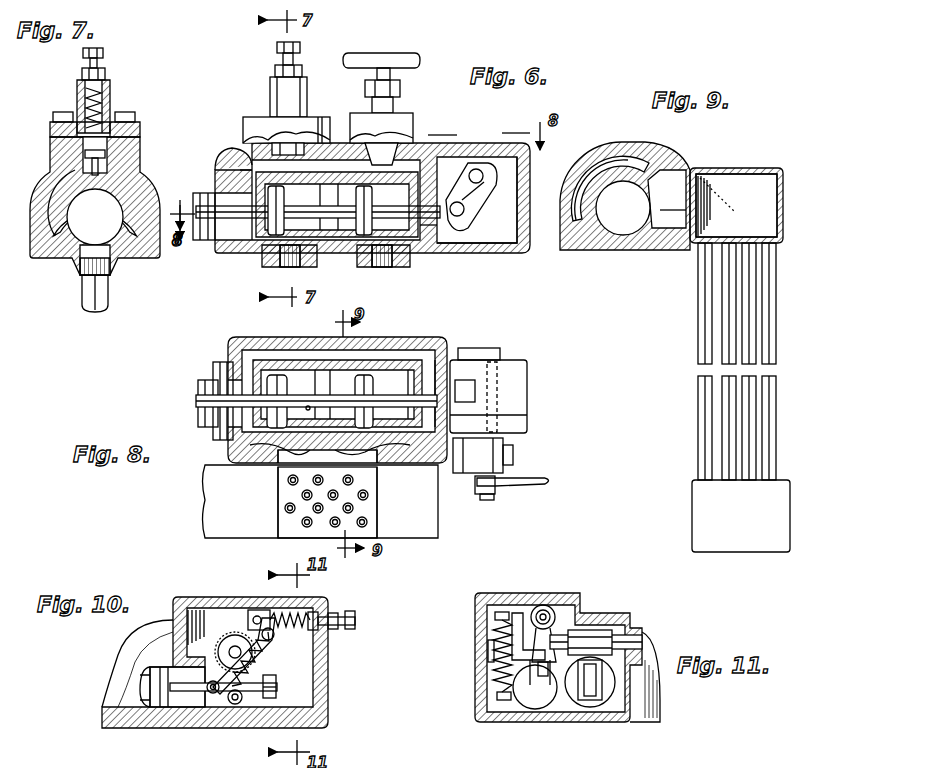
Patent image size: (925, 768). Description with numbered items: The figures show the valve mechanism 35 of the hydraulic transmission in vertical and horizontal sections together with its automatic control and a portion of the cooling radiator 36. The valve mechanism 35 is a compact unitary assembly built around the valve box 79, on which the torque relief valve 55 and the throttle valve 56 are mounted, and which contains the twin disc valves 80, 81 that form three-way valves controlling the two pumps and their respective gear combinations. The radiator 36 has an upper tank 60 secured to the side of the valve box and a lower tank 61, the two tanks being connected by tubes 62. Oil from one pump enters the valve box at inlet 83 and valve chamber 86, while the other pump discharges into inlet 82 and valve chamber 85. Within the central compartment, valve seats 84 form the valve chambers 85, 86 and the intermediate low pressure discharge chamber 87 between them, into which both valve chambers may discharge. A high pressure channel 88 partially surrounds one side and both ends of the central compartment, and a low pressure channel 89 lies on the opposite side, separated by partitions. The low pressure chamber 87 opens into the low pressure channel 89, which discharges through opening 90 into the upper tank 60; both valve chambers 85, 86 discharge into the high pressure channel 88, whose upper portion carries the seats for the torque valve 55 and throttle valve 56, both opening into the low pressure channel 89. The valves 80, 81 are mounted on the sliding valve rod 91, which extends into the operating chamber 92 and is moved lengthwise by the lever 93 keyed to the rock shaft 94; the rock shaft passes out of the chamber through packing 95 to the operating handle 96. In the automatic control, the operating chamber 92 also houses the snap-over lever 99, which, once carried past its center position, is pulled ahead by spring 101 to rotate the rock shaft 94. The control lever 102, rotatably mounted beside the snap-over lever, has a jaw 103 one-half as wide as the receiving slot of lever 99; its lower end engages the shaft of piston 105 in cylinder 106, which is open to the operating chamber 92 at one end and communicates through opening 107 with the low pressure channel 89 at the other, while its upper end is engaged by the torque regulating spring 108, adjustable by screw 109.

In FIG. 6, the valve mechanism 35 is at (420, 143).
In FIG. 9, the radiator 36 is at (752, 172).
In FIG. 8, the radiator 36 is at (215, 512).
In FIG. 7, the torque relief valve 55 is at (105, 95).
In FIG. 6, the torque relief valve 55 is at (270, 85).
In FIG. 6, the throttle valve 56 is at (400, 88).
In FIG. 9, the upper tank 60 is at (736, 205).
In FIG. 9, the lower tank 61 is at (706, 516).
In FIG. 9, the tubes 62 is at (700, 380).
In FIG. 6, the valve box 79 is at (342, 143).
In FIG. 8, the valve 80 is at (290, 365).
In FIG. 8, the valve 81 is at (370, 372).
In FIG. 6, the inlet 82 is at (283, 268).
In FIG. 6, the inlet 83 is at (388, 268).
In FIG. 8, the valve seats 84 is at (316, 428).
In FIG. 11, the valve seats 84 is at (600, 706).
In FIG. 7, the valve chamber 85 is at (112, 238).
In FIG. 6, the valve chamber 85 is at (262, 242).
In FIG. 8, the valve chamber 85 is at (297, 372).
In FIG. 8, the valve chamber 86 is at (400, 370).
In FIG. 6, the low pressure discharge chamber 87 is at (345, 242).
In FIG. 9, the low pressure discharge chamber 87 is at (625, 236).
In FIG. 8, the low pressure discharge chamber 87 is at (320, 475).
In FIG. 7, the high pressure channel 88 is at (55, 235).
In FIG. 6, the high pressure channel 88 is at (243, 163).
In FIG. 9, the high pressure channel 88 is at (612, 160).
In FIG. 8, the high pressure channel 88 is at (430, 355).
In FIG. 7, the low pressure channel 89 is at (125, 162).
In FIG. 9, the low pressure channel 89 is at (662, 175).
In FIG. 8, the low pressure channel 89 is at (280, 466).
In FIG. 10, the low pressure channel 89 is at (105, 708).
In FIG. 9, the opening 90 is at (676, 250).
In FIG. 8, the opening 90 is at (370, 486).
In FIG. 6, the sliding valve rod 91 is at (316, 216).
In FIG. 8, the sliding valve rod 91 is at (238, 398).
In FIG. 6, the operating chamber 92 is at (505, 240).
In FIG. 8, the operating chamber 92 is at (337, 400).
In FIG. 10, the operating chamber 92 is at (213, 612).
In FIG. 11, the operating chamber 92 is at (567, 657).
In FIG. 6, the lever 93 is at (470, 205).
In FIG. 8, the lever 93 is at (500, 385).
In FIG. 11, the lever 93 is at (598, 630).
In FIG. 6, the rock shaft 94 is at (478, 169).
In FIG. 8, the rock shaft 94 is at (487, 500).
In FIG. 10, the rock shaft 94 is at (230, 650).
In FIG. 11, the rock shaft 94 is at (642, 650).
In FIG. 8, the packing 95 is at (513, 452).
In FIG. 8, the operating handle 96 is at (540, 478).
In FIG. 10, the snap-over lever 99 is at (272, 638).
In FIG. 11, the snap-over lever 99 is at (500, 608).
In FIG. 10, the spring 101 is at (272, 668).
In FIG. 11, the spring 101 is at (492, 660).
In FIG. 10, the control lever 102 is at (240, 622).
In FIG. 11, the control lever 102 is at (552, 610).
In FIG. 11, the jaw 103 is at (525, 612).
In FIG. 10, the piston 105 is at (148, 667).
In FIG. 10, the cylinder 106 is at (175, 667).
In FIG. 11, the cylinder 106 is at (533, 702).
In FIG. 10, the opening 107 is at (140, 690).
In FIG. 10, the torque regulating spring 108 is at (303, 605).
In FIG. 11, the torque regulating spring 108 is at (546, 604).
In FIG. 10, the screw 109 is at (355, 615).